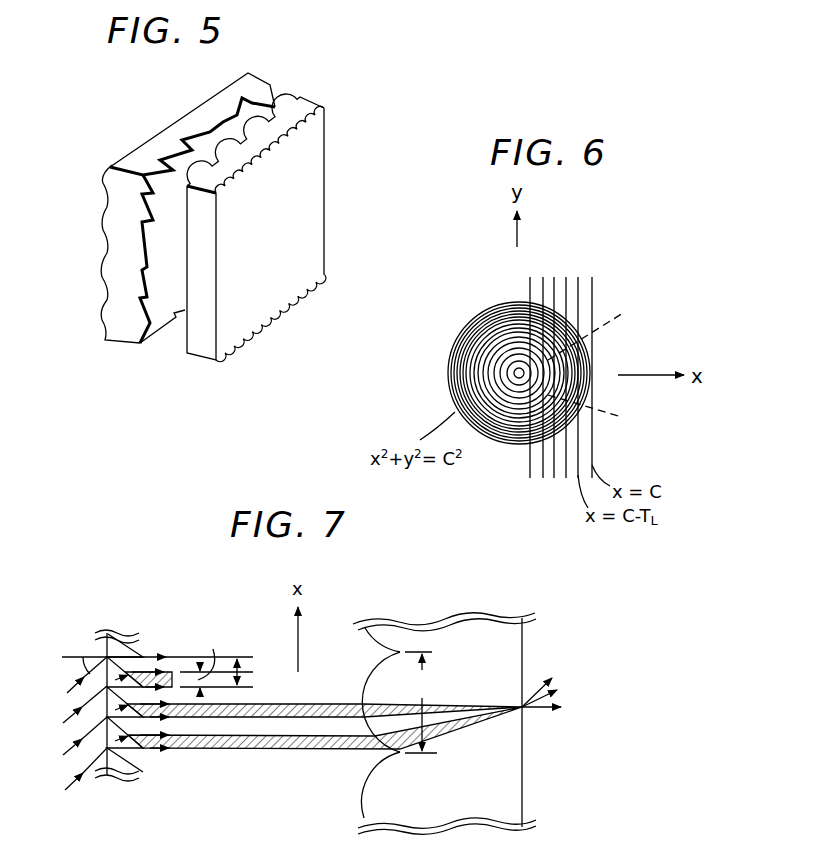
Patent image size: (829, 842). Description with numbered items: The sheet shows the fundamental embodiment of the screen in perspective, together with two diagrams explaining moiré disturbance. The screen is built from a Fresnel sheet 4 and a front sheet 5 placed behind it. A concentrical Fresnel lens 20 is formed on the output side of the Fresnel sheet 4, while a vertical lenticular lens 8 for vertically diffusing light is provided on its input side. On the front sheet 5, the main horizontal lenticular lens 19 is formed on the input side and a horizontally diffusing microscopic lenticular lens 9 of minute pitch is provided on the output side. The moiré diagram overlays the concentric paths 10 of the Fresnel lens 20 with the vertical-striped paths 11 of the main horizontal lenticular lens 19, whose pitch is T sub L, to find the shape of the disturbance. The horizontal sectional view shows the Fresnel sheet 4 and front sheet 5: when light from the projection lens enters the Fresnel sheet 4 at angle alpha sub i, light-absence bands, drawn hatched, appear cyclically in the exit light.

In FIG. 5, the Fresnel sheet 4 is at (175, 132).
In FIG. 7, the Fresnel sheet 4 is at (115, 645).
In FIG. 5, the front sheet 5 is at (293, 115).
In FIG. 7, the front sheet 5 is at (488, 642).
In FIG. 5, the vertical lenticular lens 8 is at (117, 210).
In FIG. 5, the horizontally diffusing microscopic lenticular lens 9 is at (310, 145).
In FIG. 6, the paths of the concentrical Fresnel lens 10 is at (503, 300).
In FIG. 6, the paths of the vertical-striped main horizontal lenticular lens 11 is at (593, 425).
In FIG. 5, the main horizontal lenticular lens 19 is at (287, 100).
In FIG. 7, the main horizontal lenticular lens 19 is at (368, 682).
In FIG. 5, the concentrical Fresnel lens 20 is at (165, 268).